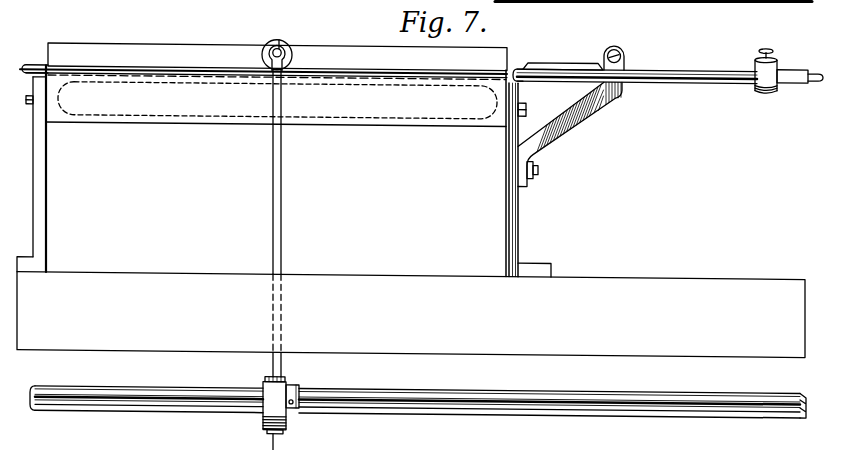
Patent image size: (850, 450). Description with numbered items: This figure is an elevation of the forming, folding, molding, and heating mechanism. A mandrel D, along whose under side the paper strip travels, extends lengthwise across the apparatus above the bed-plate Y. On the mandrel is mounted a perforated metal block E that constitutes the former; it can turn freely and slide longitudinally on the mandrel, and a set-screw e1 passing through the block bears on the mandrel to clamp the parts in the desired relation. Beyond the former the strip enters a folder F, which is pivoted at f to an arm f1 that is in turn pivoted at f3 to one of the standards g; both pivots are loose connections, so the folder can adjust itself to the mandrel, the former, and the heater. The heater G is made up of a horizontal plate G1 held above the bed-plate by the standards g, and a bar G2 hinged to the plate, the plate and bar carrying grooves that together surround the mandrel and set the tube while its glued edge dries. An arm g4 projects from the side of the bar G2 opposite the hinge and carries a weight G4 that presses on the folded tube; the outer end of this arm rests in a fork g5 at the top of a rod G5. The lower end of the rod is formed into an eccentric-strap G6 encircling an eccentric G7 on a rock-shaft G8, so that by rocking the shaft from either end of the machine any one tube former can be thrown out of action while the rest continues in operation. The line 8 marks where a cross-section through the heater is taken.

The frame Y is at (411, 315).
The heater G is at (276, 170).
The horizontal plate G1 is at (198, 64).
The bar G2 is at (277, 57).
The weight G4 is at (288, 47).
The rod G5 is at (282, 193).
The eccentric-strap G6 is at (284, 424).
The eccentric G7 is at (263, 423).
The rock-shaft G8 is at (386, 396).
The standard g is at (34, 180).
The arm g4 is at (271, 43).
The fork g5 is at (262, 55).
The section line 8 is at (279, 37).
The folder F is at (563, 55).
The pivot f is at (621, 46).
The strut f1 is at (570, 134).
The pivot f3 is at (540, 166).
The block E is at (766, 84).
The set-screw e1 is at (767, 43).
The mandrel D is at (818, 77).